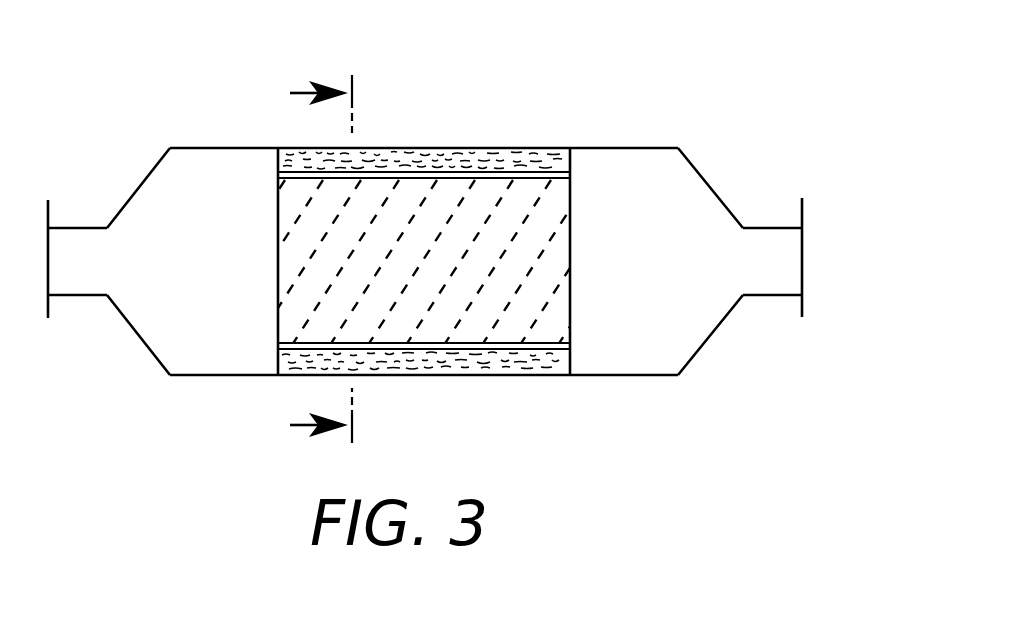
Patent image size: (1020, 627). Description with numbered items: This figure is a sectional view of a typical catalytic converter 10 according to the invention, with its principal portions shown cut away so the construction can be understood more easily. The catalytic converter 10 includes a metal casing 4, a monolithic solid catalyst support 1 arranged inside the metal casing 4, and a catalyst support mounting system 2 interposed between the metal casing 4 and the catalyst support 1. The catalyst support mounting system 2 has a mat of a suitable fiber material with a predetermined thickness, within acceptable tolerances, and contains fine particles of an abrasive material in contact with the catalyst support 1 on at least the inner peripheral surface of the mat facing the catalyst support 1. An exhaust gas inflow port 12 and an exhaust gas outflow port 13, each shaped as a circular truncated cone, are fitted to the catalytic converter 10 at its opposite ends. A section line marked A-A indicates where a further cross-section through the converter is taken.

The catalytic converter 10 is at (426, 260).
The metal casing 4 is at (630, 375).
The exhaust gas inflow port 12 is at (82, 278).
The exhaust gas outflow port 13 is at (772, 277).
The catalyst support mounting system 2 is at (467, 148).
The monolithic solid catalyst support 1 is at (293, 312).